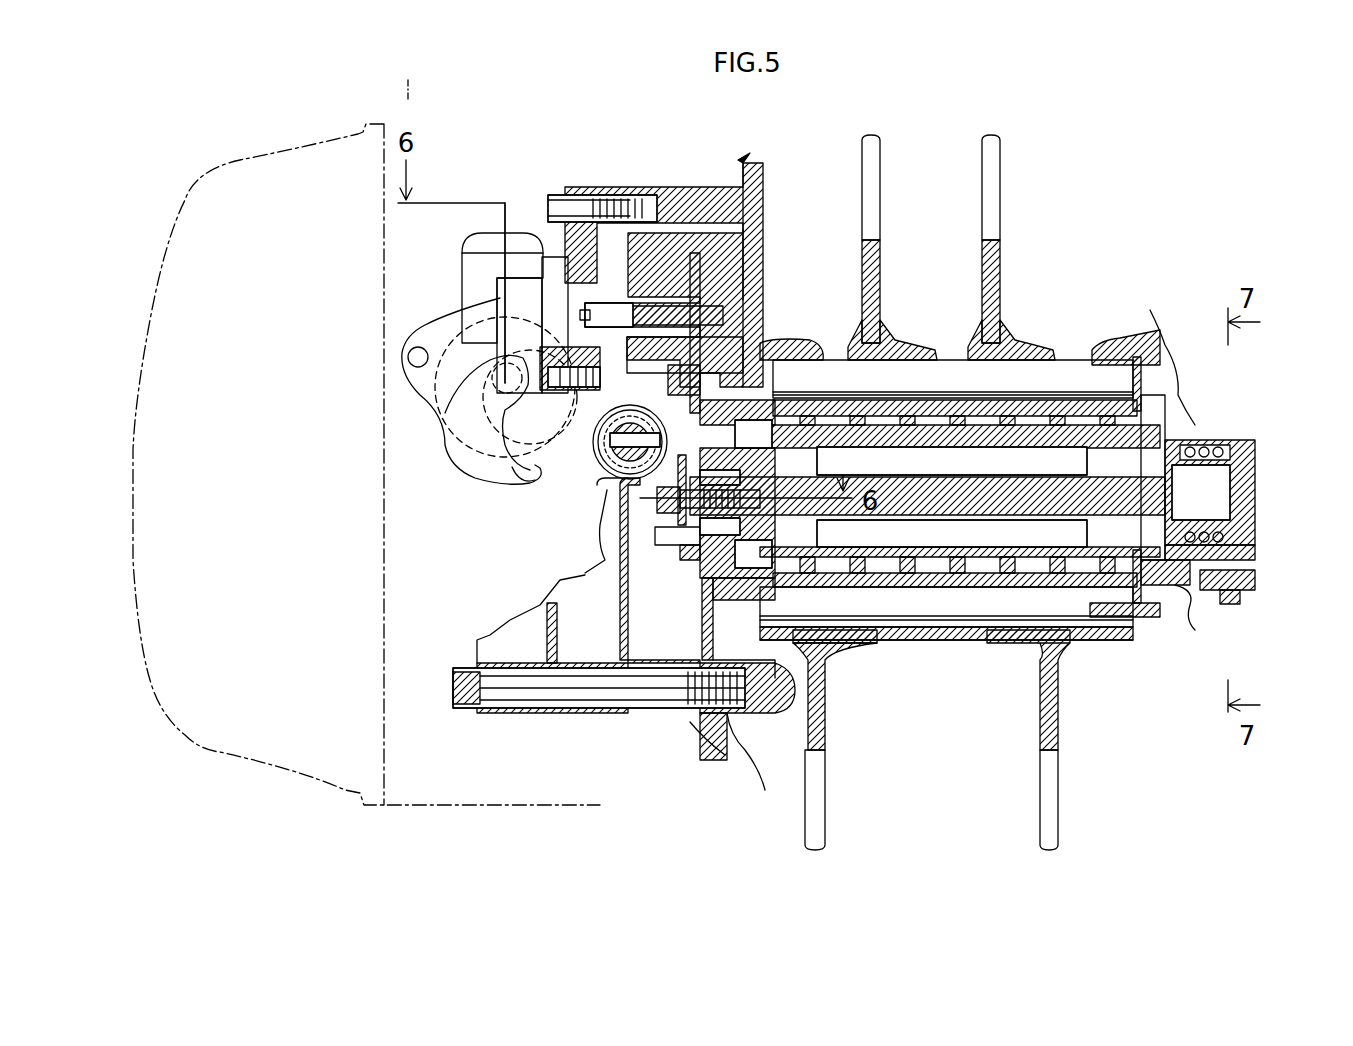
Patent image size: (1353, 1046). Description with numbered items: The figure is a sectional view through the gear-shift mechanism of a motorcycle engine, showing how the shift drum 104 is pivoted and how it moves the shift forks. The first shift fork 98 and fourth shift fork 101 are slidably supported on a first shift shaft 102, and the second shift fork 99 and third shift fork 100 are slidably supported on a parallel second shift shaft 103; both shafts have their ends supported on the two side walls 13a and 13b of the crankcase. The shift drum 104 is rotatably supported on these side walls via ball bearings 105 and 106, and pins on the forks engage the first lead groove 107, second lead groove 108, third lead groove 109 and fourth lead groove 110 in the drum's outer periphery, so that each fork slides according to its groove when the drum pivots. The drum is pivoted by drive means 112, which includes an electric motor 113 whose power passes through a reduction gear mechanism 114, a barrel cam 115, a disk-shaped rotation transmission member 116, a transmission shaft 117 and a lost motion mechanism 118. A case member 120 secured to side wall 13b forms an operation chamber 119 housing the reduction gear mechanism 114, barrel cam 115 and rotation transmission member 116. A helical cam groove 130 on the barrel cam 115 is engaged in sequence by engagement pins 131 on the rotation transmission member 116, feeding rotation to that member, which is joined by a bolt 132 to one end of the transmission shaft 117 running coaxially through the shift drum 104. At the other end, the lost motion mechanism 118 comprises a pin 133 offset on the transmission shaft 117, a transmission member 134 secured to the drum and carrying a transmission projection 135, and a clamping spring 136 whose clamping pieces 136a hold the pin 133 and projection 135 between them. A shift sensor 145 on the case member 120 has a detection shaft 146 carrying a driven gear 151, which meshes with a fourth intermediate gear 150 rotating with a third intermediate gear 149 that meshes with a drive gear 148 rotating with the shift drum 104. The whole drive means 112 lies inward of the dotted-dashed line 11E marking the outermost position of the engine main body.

The dotted-dashed line 11E is at (124, 440).
The reduction gear mechanism 114 is at (485, 305).
The shift sensor 145 is at (480, 335).
The electric motor 113 is at (460, 425).
The drive means 112 is at (550, 493).
The case member 120 is at (680, 187).
The driven gear 151 is at (752, 225).
The side wall 13b is at (760, 260).
The detection shaft 146 is at (668, 300).
The third intermediate gear 149 is at (740, 338).
The fourth intermediate gear 150 is at (690, 395).
The ball bearing 106 is at (773, 343).
The barrel cam 115 is at (612, 478).
The engagement pins 131 is at (598, 460).
The bolt 132 is at (660, 495).
The rotation transmission member 116 is at (690, 578).
The cam groove 130 is at (615, 520).
The operation chamber 119 is at (655, 713).
The second shift shaft 103 is at (958, 378).
The third lead groove 109 is at (878, 410).
The second lead groove 108 is at (990, 410).
The shift drum 104 is at (970, 520).
The transmission shaft 117 is at (960, 515).
The drive gear 148 is at (740, 595).
The first shift shaft 102 is at (930, 640).
The fourth lead groove 110 is at (820, 640).
The third shift fork 100 is at (885, 275).
The second shift fork 99 is at (1005, 273).
The fourth shift fork 101 is at (830, 722).
The first shift fork 98 is at (1062, 722).
The side wall 13a is at (1122, 338).
The ball bearing 105 is at (1145, 420).
The lost motion mechanism 118 is at (1226, 437).
The clamping spring 136 is at (1195, 445).
The transmission projection 135 is at (1255, 560).
The pin 133 is at (1210, 590).
The clamping pieces 136a is at (1240, 600).
The transmission member 134 is at (1185, 585).
The first lead groove 107 is at (1120, 617).